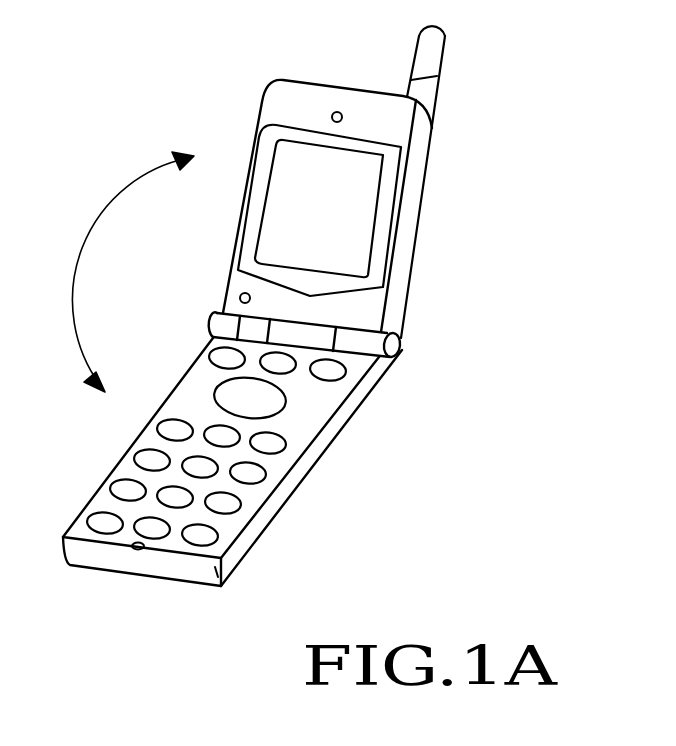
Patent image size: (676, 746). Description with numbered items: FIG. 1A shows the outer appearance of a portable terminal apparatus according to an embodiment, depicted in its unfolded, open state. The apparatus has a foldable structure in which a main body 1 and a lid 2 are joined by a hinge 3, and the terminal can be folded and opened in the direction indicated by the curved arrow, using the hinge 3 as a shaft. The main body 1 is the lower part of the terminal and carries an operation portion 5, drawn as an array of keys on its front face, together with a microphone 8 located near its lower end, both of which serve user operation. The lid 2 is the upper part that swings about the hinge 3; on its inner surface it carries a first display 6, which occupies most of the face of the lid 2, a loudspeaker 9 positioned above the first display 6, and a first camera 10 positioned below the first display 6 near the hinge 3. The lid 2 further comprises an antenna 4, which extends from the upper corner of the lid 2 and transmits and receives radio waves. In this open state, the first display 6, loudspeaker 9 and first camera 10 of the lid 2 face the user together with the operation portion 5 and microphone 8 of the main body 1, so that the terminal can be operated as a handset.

The main body 1 is at (273, 505).
The lid 2 is at (422, 148).
The hinge 3 is at (393, 347).
The antenna 4 is at (433, 52).
The operation portion 5 is at (270, 437).
The first display 6 is at (338, 205).
The microphone 8 is at (140, 552).
The loudspeaker 9 is at (339, 112).
The first camera 10 is at (240, 297).